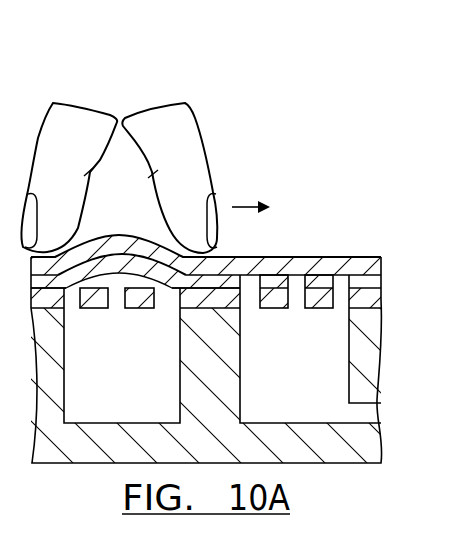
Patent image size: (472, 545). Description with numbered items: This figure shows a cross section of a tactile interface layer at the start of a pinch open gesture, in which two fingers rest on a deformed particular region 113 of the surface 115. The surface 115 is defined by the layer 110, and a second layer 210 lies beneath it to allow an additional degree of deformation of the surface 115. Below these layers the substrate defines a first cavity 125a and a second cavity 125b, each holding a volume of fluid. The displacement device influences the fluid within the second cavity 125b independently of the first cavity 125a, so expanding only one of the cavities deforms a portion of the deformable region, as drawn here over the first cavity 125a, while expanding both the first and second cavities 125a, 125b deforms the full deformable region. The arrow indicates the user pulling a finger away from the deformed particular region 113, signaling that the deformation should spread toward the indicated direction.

The particular region 113 is at (117, 229).
The surface 115 is at (323, 257).
The second layer 210 is at (364, 268).
The layer 110 is at (370, 281).
The first cavity 125a is at (153, 379).
The second cavity 125b is at (325, 379).